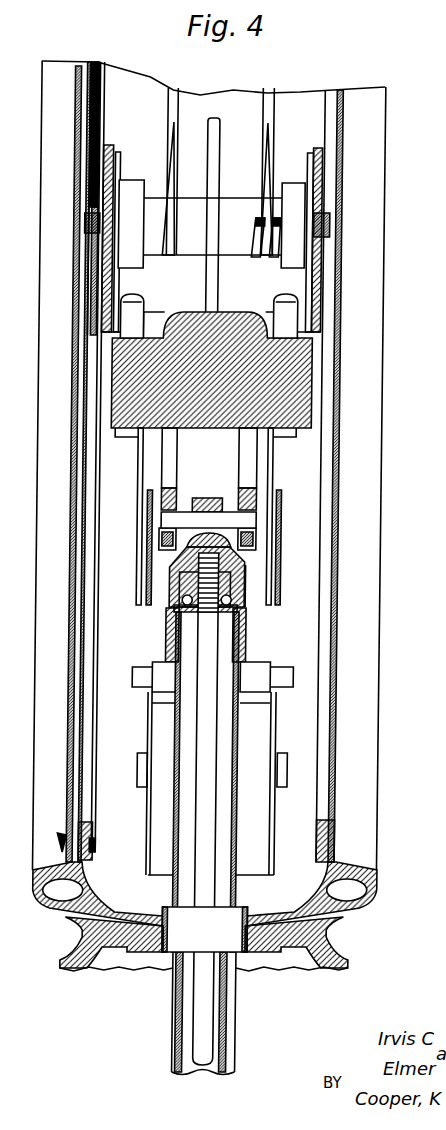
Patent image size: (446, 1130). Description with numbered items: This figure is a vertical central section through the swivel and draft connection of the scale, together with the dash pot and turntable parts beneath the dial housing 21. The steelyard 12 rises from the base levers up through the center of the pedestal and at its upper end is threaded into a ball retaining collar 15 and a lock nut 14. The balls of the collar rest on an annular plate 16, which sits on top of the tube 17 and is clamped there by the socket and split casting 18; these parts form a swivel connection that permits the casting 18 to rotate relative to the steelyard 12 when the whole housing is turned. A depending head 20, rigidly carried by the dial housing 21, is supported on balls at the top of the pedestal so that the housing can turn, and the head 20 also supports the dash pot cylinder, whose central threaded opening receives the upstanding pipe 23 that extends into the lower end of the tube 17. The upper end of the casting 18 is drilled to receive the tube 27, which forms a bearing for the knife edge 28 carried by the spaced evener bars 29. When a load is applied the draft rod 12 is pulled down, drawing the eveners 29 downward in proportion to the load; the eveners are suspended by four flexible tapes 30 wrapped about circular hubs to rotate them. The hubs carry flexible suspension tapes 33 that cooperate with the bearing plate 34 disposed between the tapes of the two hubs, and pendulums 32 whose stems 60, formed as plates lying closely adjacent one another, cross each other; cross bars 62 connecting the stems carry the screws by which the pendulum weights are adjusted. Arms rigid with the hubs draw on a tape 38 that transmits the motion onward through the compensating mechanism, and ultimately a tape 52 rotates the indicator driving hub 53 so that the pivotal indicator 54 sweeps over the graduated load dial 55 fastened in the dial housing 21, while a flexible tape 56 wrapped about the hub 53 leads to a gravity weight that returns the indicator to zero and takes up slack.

The steelyard 12 is at (213, 714).
The lock nut 14 is at (183, 561).
The ball retaining collar 15 is at (191, 583).
The annular plate 16 is at (186, 608).
The tube 17 is at (241, 738).
The socket and split casting 18 is at (170, 641).
The depending head 20 is at (336, 946).
The dial housing 21 is at (378, 906).
The upstanding pipe 23 is at (236, 889).
The tube 27 is at (250, 575).
The knife edge 28 is at (182, 516).
The evener bars 29 is at (238, 490).
The flexible tapes 30 is at (239, 445).
The pendulums 32 is at (266, 816).
The flexible suspension tapes 33 is at (143, 302).
The bearing plate 34 is at (299, 376).
The tape 38 is at (214, 180).
The tape 52 is at (265, 123).
The indicator driving hub 53 is at (189, 248).
The pivotal indicator 54 is at (96, 99).
The graduated load dial 55 is at (91, 714).
The flexible tape 56 is at (166, 122).
The stems 60 is at (280, 490).
The cross bars 62 is at (265, 672).